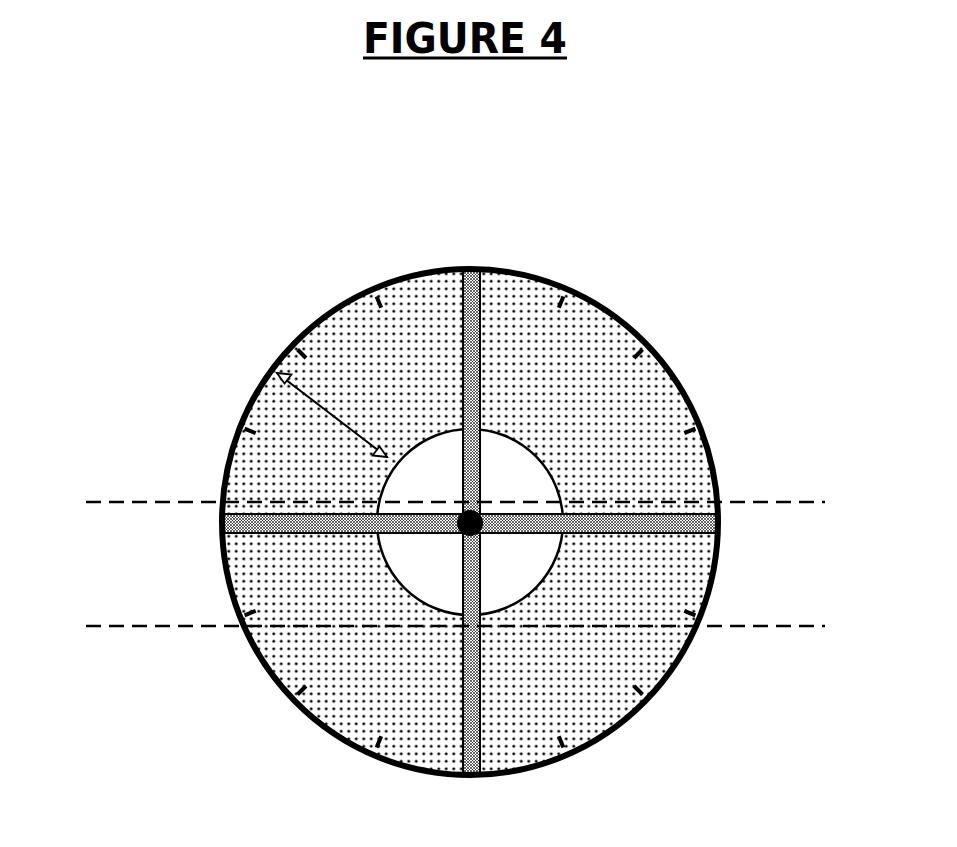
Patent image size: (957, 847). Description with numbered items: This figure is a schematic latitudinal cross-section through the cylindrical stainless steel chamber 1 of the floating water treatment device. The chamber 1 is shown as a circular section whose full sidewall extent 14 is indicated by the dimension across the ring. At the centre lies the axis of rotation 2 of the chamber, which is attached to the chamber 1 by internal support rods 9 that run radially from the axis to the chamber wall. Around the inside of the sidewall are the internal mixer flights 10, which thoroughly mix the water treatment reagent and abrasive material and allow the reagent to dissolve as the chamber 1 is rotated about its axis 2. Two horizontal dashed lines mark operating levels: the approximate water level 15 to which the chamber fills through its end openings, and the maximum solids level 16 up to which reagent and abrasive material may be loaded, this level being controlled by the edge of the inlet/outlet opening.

The stainless steel chamber 1 is at (322, 318).
The axis of rotation of chamber 2 is at (482, 535).
The internal support rods for rotational axis 9 is at (690, 514).
The internal mixer flights 10 is at (377, 760).
The full extent of sidewall to chamber 14 is at (332, 421).
The approximate water level 15 is at (474, 504).
The maximum solids level in chamber 16 is at (474, 628).